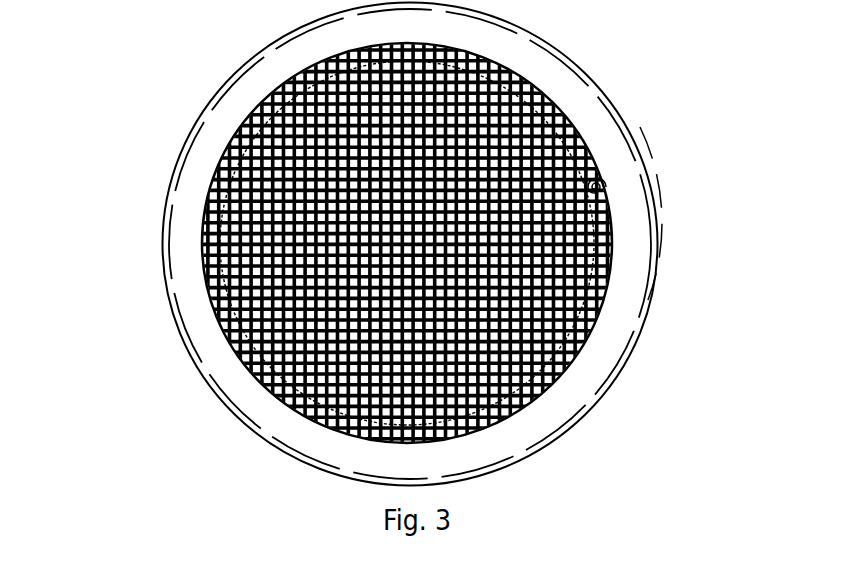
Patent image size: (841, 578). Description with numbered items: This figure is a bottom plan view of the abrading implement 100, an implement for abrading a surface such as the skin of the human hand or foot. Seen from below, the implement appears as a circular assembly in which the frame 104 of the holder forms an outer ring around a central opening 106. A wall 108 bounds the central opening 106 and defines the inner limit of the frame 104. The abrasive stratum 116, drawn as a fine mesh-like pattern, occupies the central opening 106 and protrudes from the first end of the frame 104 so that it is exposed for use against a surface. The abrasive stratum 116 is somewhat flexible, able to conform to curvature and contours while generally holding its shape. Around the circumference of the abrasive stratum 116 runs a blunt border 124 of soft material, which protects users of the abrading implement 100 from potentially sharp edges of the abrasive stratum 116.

The abrading implement 100 is at (647, 67).
The frame 104 is at (673, 290).
The central opening 106 is at (606, 197).
The wall 108 is at (628, 353).
The abrasive stratum 116 is at (252, 115).
The blunt border 124 is at (597, 238).